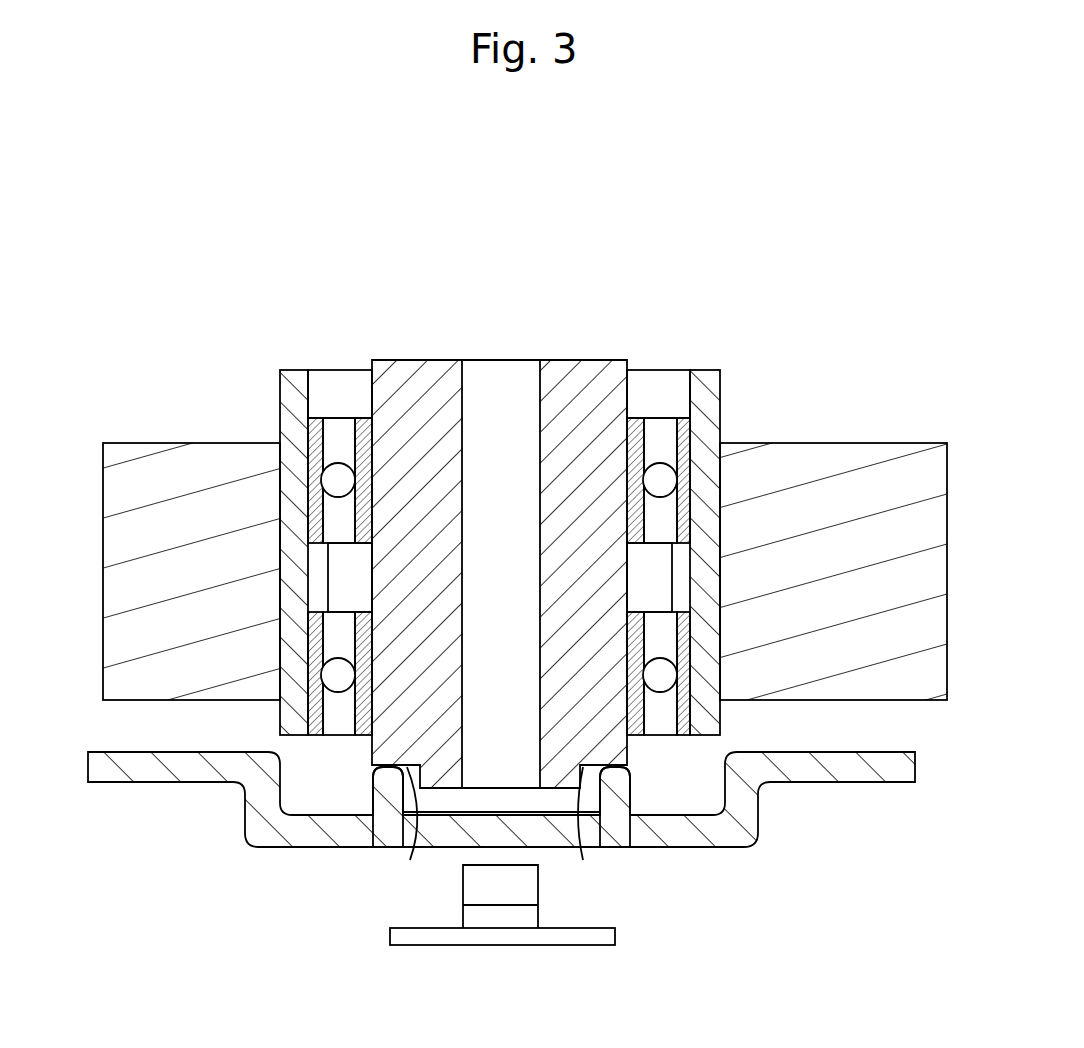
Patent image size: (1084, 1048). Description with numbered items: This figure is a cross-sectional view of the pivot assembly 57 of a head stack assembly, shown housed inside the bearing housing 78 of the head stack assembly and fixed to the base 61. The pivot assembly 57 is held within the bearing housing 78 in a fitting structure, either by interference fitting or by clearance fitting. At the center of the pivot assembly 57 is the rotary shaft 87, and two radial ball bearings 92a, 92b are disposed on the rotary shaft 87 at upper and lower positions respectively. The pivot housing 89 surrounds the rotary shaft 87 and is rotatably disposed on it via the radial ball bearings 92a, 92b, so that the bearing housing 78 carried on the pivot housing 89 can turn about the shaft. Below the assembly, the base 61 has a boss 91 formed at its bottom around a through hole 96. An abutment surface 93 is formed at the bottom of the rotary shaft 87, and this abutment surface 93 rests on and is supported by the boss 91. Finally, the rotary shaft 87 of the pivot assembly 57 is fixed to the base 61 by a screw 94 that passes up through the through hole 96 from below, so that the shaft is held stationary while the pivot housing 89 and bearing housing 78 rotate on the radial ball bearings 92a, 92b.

The pivot assembly 57 is at (500, 318).
The rotary shaft 87 is at (598, 358).
The pivot housing 89 is at (713, 370).
The radial ball bearing 92a is at (697, 447).
The radial ball bearing 92b is at (688, 750).
The bearing housing 78 is at (862, 440).
The base 61 is at (793, 783).
The boss 91 is at (373, 793).
The abutment surface 93 is at (410, 860).
The through hole 96 is at (534, 845).
The screw 94 is at (493, 945).